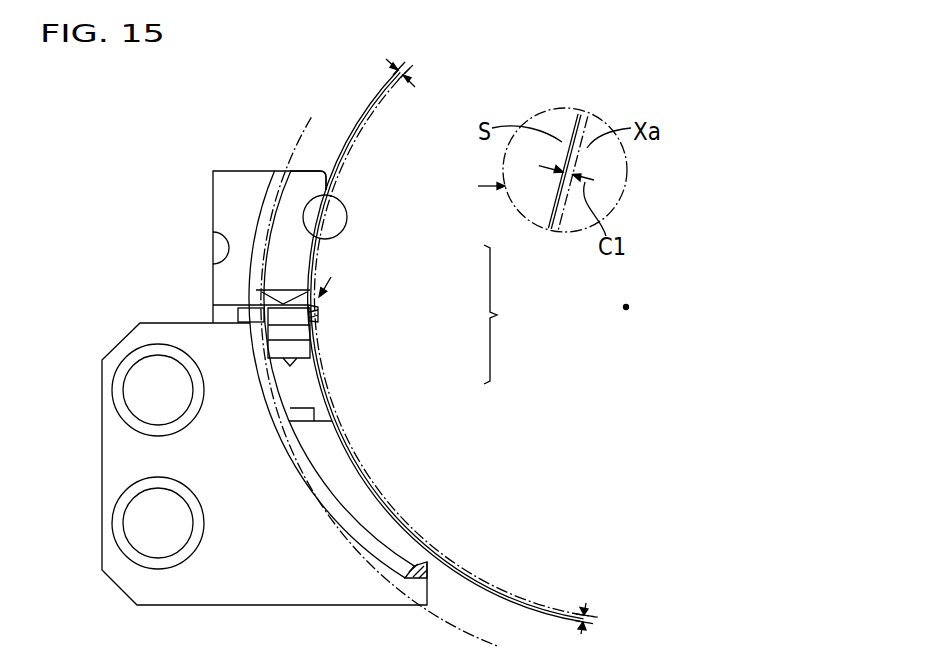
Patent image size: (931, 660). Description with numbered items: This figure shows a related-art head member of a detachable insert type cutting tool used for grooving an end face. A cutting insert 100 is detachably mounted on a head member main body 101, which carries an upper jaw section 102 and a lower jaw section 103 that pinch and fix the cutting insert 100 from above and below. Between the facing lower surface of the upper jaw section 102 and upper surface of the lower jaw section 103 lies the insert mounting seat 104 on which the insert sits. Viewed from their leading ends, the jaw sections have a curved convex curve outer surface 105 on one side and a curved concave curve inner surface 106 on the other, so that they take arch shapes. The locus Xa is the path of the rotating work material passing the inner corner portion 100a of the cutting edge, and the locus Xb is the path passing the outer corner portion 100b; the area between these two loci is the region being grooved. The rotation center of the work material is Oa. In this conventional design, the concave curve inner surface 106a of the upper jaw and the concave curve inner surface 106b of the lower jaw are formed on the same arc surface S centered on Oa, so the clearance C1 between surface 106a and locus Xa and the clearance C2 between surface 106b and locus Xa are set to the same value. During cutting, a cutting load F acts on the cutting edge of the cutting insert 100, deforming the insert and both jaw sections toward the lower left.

The cutting insert 100 is at (318, 343).
The inner corner portion 100a is at (318, 314).
The outer corner portion 100b is at (258, 305).
The head member main body 101 is at (213, 191).
The upper jaw section 102 is at (312, 178).
The lower jaw section 103 is at (386, 522).
The insert mounting seat 104 is at (250, 318).
The convex curve outer surface 105 is at (302, 463).
The concave curve inner surface 106 is at (403, 333).
The concave curve inner surface of the upper jaw section 106a is at (312, 258).
The concave curve inner surface of the lower jaw section 106b is at (316, 410).
The arc surface S is at (338, 168).
The locus of the work material passing the inner corner portion Xa is at (346, 227).
The locus of the work material passing the outer corner portion Xb is at (311, 125).
The clearance C1 is at (403, 88).
The clearance C2 is at (586, 603).
The cutting load F is at (332, 289).
The rotation center of the work material Oa is at (627, 293).